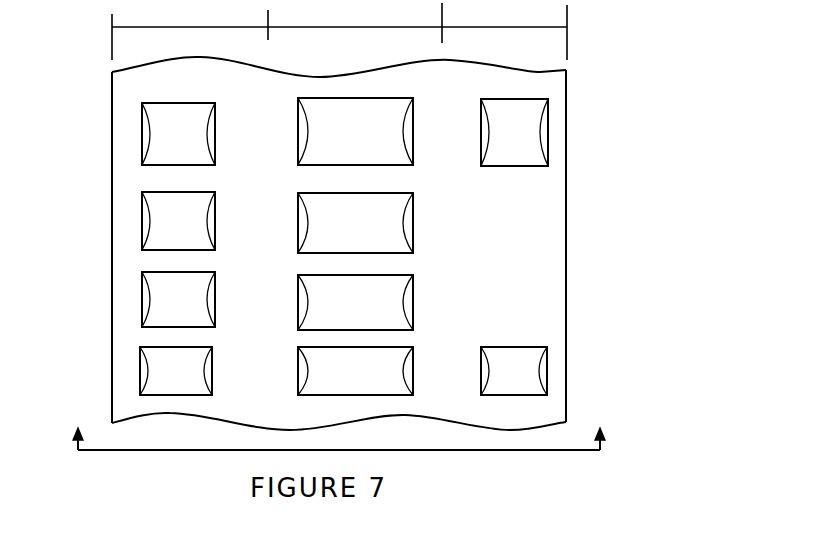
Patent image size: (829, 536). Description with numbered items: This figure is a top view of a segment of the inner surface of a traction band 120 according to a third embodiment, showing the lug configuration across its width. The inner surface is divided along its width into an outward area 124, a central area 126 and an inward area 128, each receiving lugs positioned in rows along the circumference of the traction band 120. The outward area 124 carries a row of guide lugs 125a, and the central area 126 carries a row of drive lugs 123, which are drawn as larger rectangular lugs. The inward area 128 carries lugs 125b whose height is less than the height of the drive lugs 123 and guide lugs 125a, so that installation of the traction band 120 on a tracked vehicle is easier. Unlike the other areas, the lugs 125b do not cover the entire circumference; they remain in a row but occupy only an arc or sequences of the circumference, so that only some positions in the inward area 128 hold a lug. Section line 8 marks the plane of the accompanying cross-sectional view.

The traction band 120 is at (603, 53).
The drive lugs 123 is at (413, 360).
The outward area 124 is at (145, 25).
The central area 126 is at (313, 25).
The inward area 128 is at (465, 23).
The guide lugs 125a is at (138, 148).
The lugs 125b is at (548, 134).
The section line 8- 8 is at (334, 426).